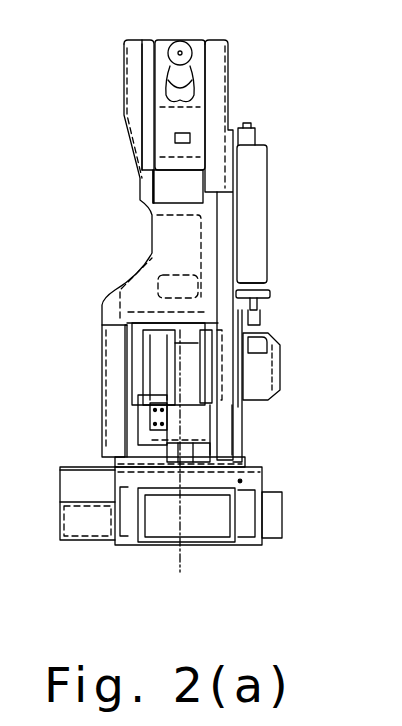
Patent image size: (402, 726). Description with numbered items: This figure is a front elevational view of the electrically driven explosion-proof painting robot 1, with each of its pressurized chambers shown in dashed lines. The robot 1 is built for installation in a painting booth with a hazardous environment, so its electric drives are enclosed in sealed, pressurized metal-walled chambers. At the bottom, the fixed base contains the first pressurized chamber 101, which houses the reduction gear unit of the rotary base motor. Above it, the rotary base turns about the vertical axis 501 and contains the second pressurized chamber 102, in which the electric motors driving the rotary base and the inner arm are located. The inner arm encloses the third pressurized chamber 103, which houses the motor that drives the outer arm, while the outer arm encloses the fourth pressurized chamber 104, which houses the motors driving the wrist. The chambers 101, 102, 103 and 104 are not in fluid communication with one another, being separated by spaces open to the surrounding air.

The electrically driven explosion-proof painting robot 1 is at (272, 236).
The first pressurized chamber 101 is at (220, 518).
The second pressurized chamber 102 is at (255, 378).
The third pressurized chamber 103 is at (132, 67).
The fourth pressurized chamber 104 is at (187, 97).
The vertical axis 501 is at (178, 548).